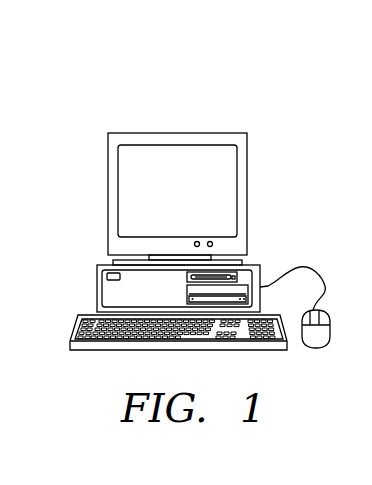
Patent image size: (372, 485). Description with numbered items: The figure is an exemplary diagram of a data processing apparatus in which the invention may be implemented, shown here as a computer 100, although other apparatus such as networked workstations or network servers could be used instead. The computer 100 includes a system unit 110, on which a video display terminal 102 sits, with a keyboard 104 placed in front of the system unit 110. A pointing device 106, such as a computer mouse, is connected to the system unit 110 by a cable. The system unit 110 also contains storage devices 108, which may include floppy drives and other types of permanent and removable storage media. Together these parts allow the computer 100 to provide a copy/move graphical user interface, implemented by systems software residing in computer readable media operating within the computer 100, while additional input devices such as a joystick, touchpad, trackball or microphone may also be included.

The computer 100 is at (171, 100).
The video display terminal 102 is at (227, 192).
The keyboard 104 is at (93, 331).
The pointing device 106 is at (316, 348).
The storage devices 108 is at (228, 280).
The system unit 110 is at (171, 269).